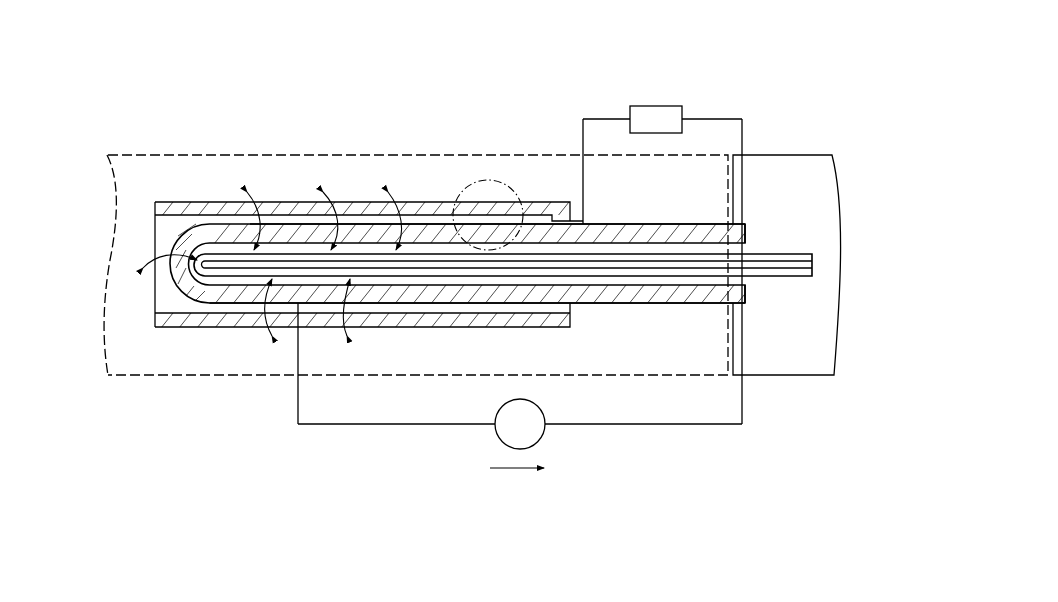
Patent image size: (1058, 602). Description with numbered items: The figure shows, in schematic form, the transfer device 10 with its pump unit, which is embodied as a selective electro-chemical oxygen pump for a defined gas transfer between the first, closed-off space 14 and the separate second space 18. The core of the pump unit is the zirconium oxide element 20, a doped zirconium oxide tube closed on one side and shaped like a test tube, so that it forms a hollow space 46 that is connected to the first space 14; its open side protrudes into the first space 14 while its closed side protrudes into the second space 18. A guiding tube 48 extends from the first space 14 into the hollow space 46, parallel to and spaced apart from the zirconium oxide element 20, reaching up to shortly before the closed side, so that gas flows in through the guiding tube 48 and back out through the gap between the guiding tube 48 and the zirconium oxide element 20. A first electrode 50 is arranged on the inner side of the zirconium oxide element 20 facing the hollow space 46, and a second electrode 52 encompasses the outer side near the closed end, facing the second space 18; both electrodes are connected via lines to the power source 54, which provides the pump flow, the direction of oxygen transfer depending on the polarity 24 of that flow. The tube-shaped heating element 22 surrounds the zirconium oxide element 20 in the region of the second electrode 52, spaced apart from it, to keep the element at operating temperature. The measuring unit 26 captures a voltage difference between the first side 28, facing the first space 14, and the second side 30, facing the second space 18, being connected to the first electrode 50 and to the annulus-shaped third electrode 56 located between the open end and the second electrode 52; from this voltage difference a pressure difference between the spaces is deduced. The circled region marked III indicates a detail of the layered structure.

The transfer device 10 is at (337, 77).
The first space 14 is at (827, 247).
The second space 18 is at (166, 176).
The zirconium oxide element 20 is at (192, 262).
The heating element 22 is at (427, 210).
The polarity 24 is at (505, 470).
The measuring unit 26 is at (657, 120).
The first side 28 is at (753, 237).
The second side 30 is at (203, 343).
The hollow space 46 is at (197, 303).
The guiding tube 48 is at (299, 302).
The first electrode 50 is at (653, 303).
The second electrode 52 is at (198, 230).
The power source 54 is at (497, 432).
The third electrode 56 is at (532, 222).
The detail section III is at (502, 180).